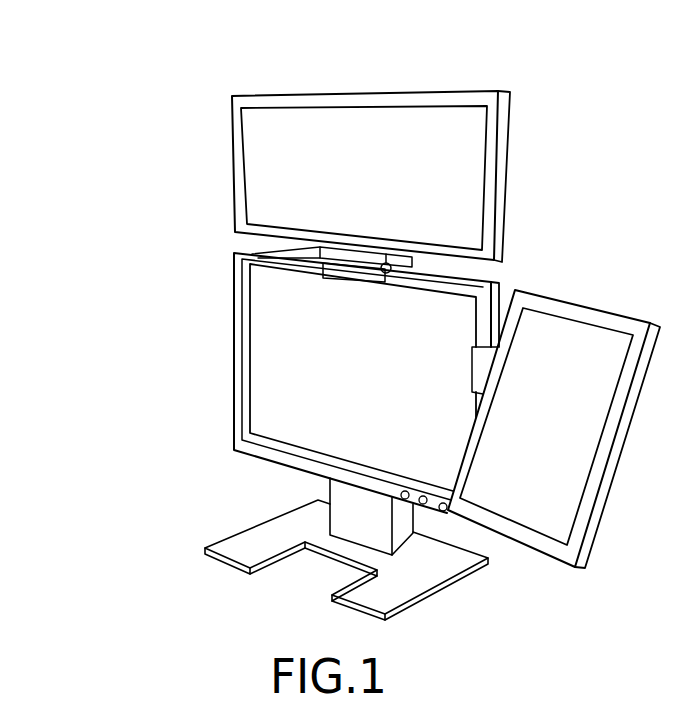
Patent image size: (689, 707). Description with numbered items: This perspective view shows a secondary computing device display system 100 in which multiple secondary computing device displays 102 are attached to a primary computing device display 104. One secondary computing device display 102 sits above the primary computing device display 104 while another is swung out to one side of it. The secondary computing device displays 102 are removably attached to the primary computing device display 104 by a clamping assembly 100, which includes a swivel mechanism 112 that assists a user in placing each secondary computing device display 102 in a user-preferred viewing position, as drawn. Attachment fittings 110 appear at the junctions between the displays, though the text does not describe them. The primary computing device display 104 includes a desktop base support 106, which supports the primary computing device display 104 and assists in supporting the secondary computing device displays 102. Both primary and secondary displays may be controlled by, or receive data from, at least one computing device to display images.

The secondary computing device display system 100 is at (114, 99).
The secondary computing device display 102 is at (250, 72).
The primary computing device display 104 is at (221, 462).
The desktop base support 106 is at (443, 592).
The hinge 110 is at (320, 252).
The swivel mechanism 112 is at (392, 273).